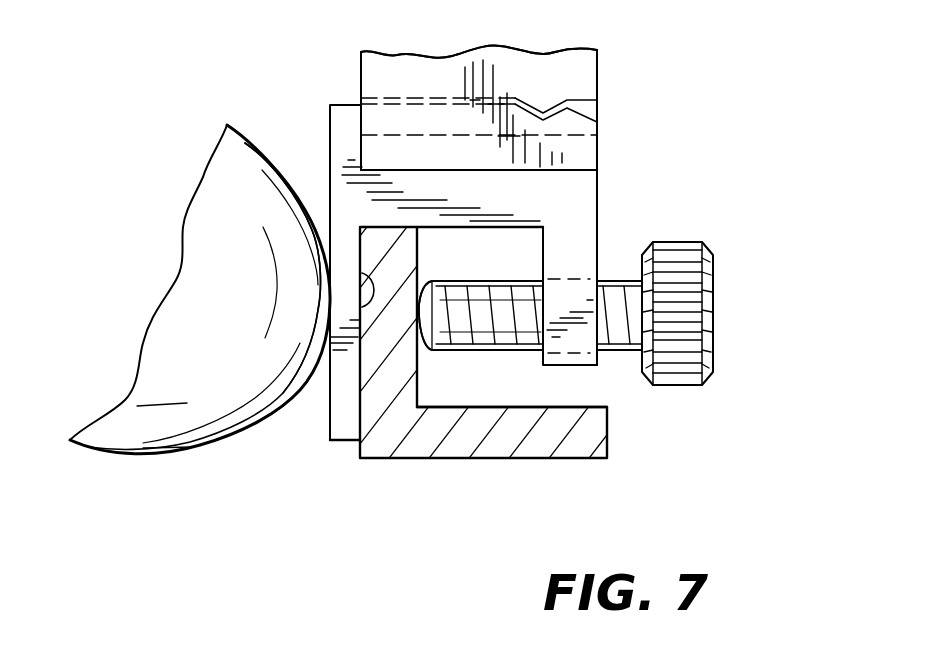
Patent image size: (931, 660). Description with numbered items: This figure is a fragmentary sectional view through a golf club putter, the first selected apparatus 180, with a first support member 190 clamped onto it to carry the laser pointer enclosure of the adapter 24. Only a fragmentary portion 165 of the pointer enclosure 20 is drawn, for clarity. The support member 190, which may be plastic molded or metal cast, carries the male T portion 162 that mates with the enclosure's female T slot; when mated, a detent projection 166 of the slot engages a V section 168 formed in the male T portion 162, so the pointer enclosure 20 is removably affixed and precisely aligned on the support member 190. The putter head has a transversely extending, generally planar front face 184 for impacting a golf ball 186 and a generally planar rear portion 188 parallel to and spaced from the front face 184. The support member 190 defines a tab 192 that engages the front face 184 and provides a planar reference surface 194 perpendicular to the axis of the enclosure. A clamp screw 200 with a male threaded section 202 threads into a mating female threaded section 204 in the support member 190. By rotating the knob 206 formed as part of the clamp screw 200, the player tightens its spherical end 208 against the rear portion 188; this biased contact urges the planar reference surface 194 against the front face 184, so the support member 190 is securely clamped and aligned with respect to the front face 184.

The pointer enclosure 20 is at (361, 77).
The adapter 24 is at (610, 90).
The male T portion 162 is at (330, 140).
The fragmentary portion 165 is at (393, 53).
The detent projection 166 is at (545, 97).
The V section 168 is at (597, 123).
The first selected apparatus 180 is at (578, 460).
The front face 184 is at (358, 425).
The golf ball 186 is at (203, 178).
The rear portion 188 is at (412, 382).
The first support member 190 is at (597, 197).
The tab 192 is at (330, 389).
The planar reference surface 194 is at (360, 309).
The clamp screw 200 is at (680, 385).
The male threaded section 202 is at (525, 352).
The female threaded section 204 is at (568, 278).
The knob 206 is at (717, 312).
The spherical end 208 is at (423, 310).